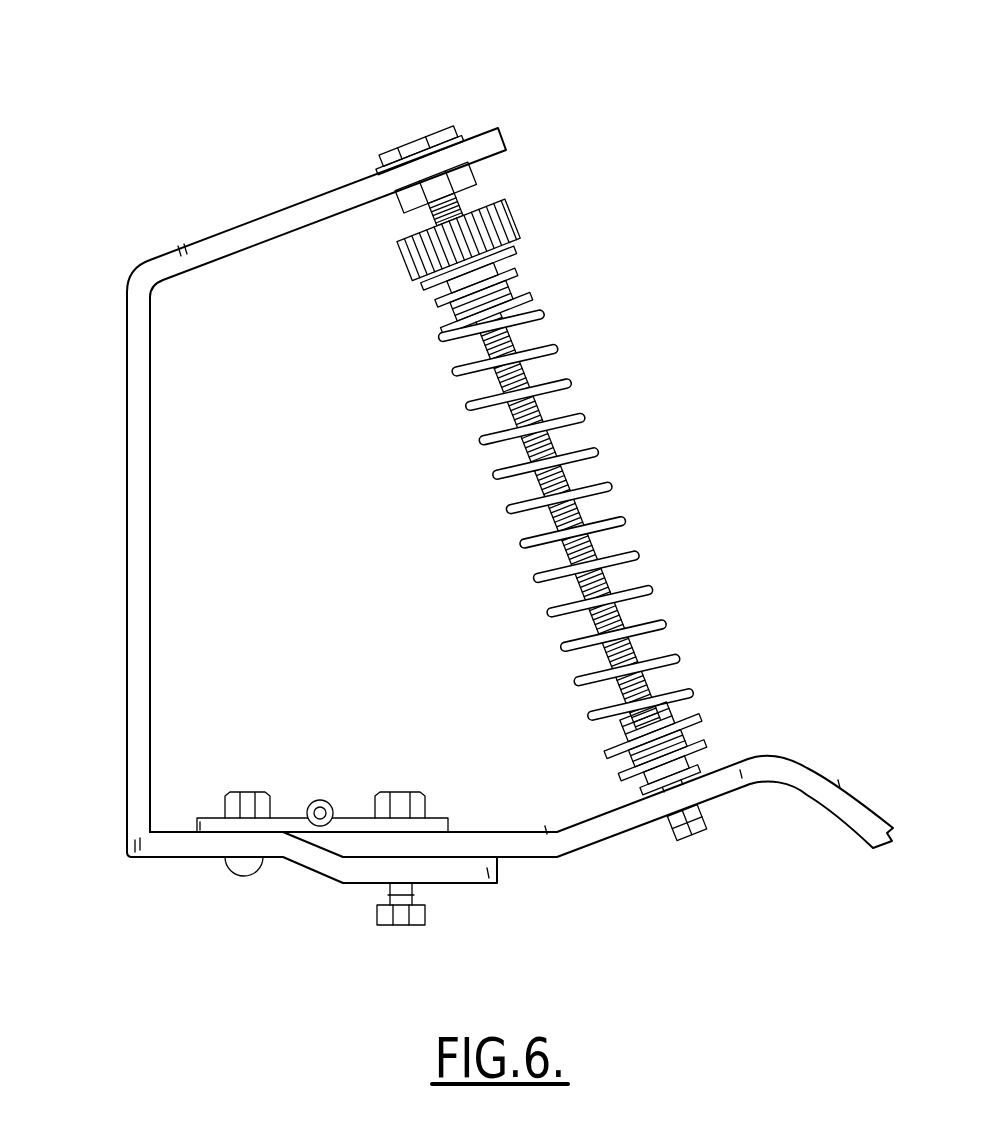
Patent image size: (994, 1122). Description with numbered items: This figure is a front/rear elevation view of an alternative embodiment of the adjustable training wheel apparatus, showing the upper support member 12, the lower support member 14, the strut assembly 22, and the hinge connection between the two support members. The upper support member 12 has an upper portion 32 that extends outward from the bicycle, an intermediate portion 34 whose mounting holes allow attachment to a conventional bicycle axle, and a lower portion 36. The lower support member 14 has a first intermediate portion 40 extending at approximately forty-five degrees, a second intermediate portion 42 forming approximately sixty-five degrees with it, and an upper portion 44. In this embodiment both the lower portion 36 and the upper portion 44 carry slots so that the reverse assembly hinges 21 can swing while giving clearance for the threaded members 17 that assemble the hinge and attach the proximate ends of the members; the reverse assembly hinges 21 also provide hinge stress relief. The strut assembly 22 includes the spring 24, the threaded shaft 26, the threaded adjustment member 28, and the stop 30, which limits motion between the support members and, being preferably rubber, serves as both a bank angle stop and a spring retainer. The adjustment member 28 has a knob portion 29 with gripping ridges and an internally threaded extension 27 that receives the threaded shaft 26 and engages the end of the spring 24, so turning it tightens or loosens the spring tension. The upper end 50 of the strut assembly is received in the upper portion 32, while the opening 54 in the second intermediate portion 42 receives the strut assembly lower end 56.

The upper support member 12 is at (116, 519).
The lower support member 14 is at (805, 808).
The threaded members 17 is at (407, 928).
The reverse assembly hinges 21 is at (342, 818).
The strut assembly 22 is at (606, 506).
The spring 24 is at (563, 420).
The threaded shaft 26 is at (472, 197).
The extension 27 is at (438, 318).
The threaded adjustment member 28 is at (538, 224).
The knob portion 29 is at (403, 250).
The stop 30 is at (686, 713).
The upper portion 32 is at (256, 220).
The intermediate portion 34 is at (126, 572).
The lower portion 36 is at (307, 868).
The first intermediate portion 40 is at (840, 783).
The second intermediate portion 42 is at (607, 837).
The upper portion 44 is at (477, 830).
The upper end 50 is at (423, 118).
The opening 54 is at (700, 806).
The strut assembly lower end 56 is at (581, 747).